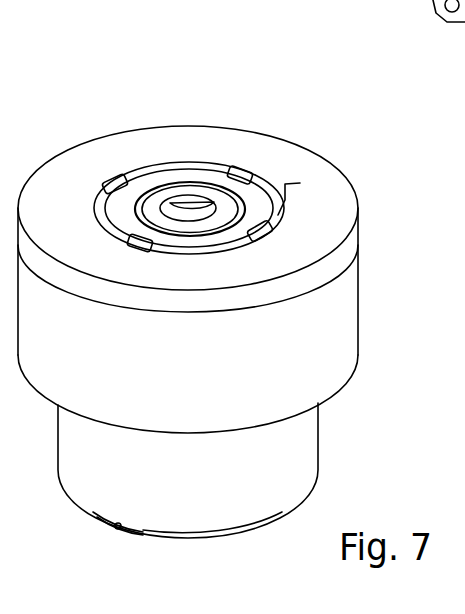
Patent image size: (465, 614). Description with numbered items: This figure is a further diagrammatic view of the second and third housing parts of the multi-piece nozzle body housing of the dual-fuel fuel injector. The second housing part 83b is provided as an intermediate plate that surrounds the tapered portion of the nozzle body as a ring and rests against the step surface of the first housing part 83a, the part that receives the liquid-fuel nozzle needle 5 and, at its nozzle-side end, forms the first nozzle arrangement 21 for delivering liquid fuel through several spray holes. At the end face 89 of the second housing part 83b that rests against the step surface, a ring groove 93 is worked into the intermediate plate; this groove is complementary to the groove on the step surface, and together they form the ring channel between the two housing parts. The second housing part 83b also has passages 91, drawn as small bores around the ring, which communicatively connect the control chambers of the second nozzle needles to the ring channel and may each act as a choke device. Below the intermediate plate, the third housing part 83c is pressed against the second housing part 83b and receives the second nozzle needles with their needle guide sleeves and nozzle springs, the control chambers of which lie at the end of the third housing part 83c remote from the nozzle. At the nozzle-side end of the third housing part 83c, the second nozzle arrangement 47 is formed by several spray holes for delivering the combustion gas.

The liquid-fuel nozzle needle 5 is at (183, 200).
The first nozzle arrangement 21 is at (449, 32).
The second nozzle arrangement 47 is at (112, 525).
The first housing part 83a is at (212, 190).
The second housing part 83b is at (325, 268).
The third housing part 83c is at (314, 350).
The end face 89 is at (136, 153).
The passages 91 is at (113, 188).
The ring groove 93 is at (300, 183).